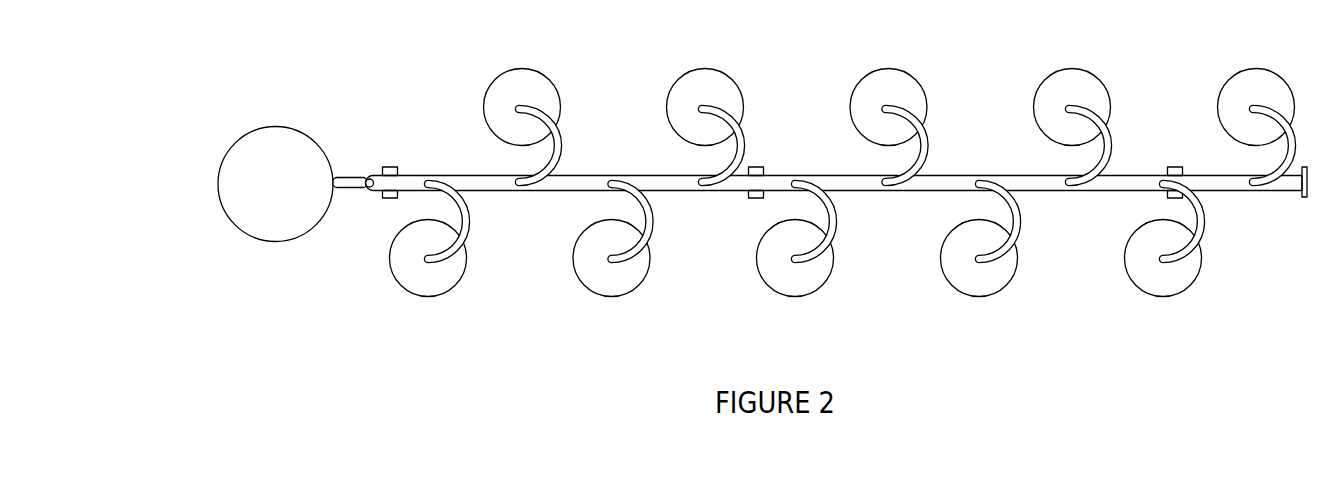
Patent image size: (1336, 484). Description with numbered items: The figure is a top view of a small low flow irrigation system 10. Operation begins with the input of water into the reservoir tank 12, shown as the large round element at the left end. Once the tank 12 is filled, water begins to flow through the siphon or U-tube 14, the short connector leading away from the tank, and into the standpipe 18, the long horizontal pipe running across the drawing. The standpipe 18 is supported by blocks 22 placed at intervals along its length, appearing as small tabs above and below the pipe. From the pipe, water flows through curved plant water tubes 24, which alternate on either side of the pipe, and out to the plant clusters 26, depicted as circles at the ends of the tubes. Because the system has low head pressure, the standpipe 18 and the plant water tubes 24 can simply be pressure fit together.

The low flow irrigation system 10 is at (245, 353).
The reservoir tank 12 is at (242, 148).
The siphon or U-tube 14 is at (346, 186).
The standpipe 18 is at (367, 173).
The blocks 22 is at (390, 168).
The plant water tubes 24 is at (1097, 160).
The plant clusters 26 is at (1133, 263).